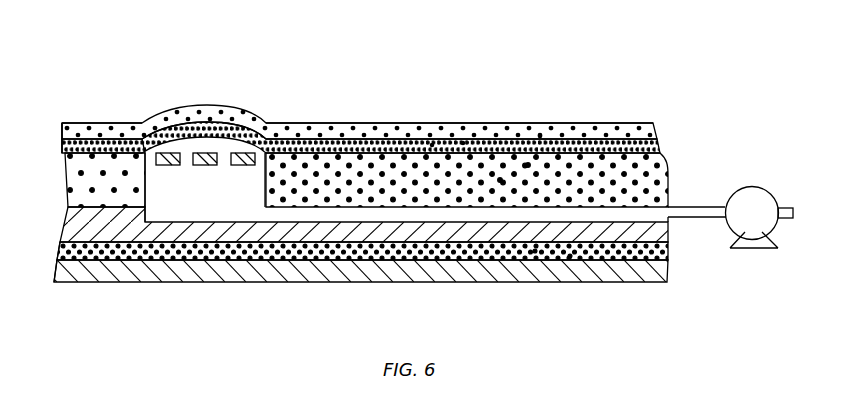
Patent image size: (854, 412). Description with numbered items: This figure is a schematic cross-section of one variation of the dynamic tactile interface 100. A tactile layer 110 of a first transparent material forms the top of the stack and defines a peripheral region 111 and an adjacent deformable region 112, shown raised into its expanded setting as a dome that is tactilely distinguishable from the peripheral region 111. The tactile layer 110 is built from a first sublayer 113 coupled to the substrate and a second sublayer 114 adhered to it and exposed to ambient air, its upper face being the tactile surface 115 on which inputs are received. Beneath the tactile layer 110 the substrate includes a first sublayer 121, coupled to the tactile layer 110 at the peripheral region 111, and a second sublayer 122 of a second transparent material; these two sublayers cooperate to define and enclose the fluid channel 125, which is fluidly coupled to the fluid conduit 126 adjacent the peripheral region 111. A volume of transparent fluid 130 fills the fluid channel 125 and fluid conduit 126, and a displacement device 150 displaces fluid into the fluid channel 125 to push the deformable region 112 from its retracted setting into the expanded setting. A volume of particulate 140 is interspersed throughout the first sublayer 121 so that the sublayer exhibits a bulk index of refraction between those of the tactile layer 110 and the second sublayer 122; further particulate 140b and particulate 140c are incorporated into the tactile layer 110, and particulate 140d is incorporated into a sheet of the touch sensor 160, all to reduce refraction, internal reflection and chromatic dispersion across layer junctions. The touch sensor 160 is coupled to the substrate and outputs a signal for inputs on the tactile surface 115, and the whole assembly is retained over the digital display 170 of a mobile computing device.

The dynamic tactile interface 100 is at (686, 73).
The tactile layer 110 is at (62, 123).
The peripheral region 111 is at (92, 114).
The deformable region 112 is at (208, 98).
The first sublayer of the tactile layer 113 is at (650, 147).
The second sublayer of the tactile layer 114 is at (645, 130).
The tactile surface 115 is at (333, 114).
The first sublayer of the substrate 121 is at (648, 178).
The second sublayer of the substrate 122 is at (638, 231).
The fluid channel 125 is at (423, 216).
The fluid conduit 126 is at (148, 152).
The volume of transparent fluid 130 is at (222, 182).
The volume of particulate 140 is at (528, 164).
The particulate 140b is at (463, 144).
The particulate 140c is at (541, 137).
The particulate 140d is at (570, 257).
The displacement device 150 is at (755, 197).
The touch sensor 160 is at (62, 250).
The digital display 170 is at (190, 272).